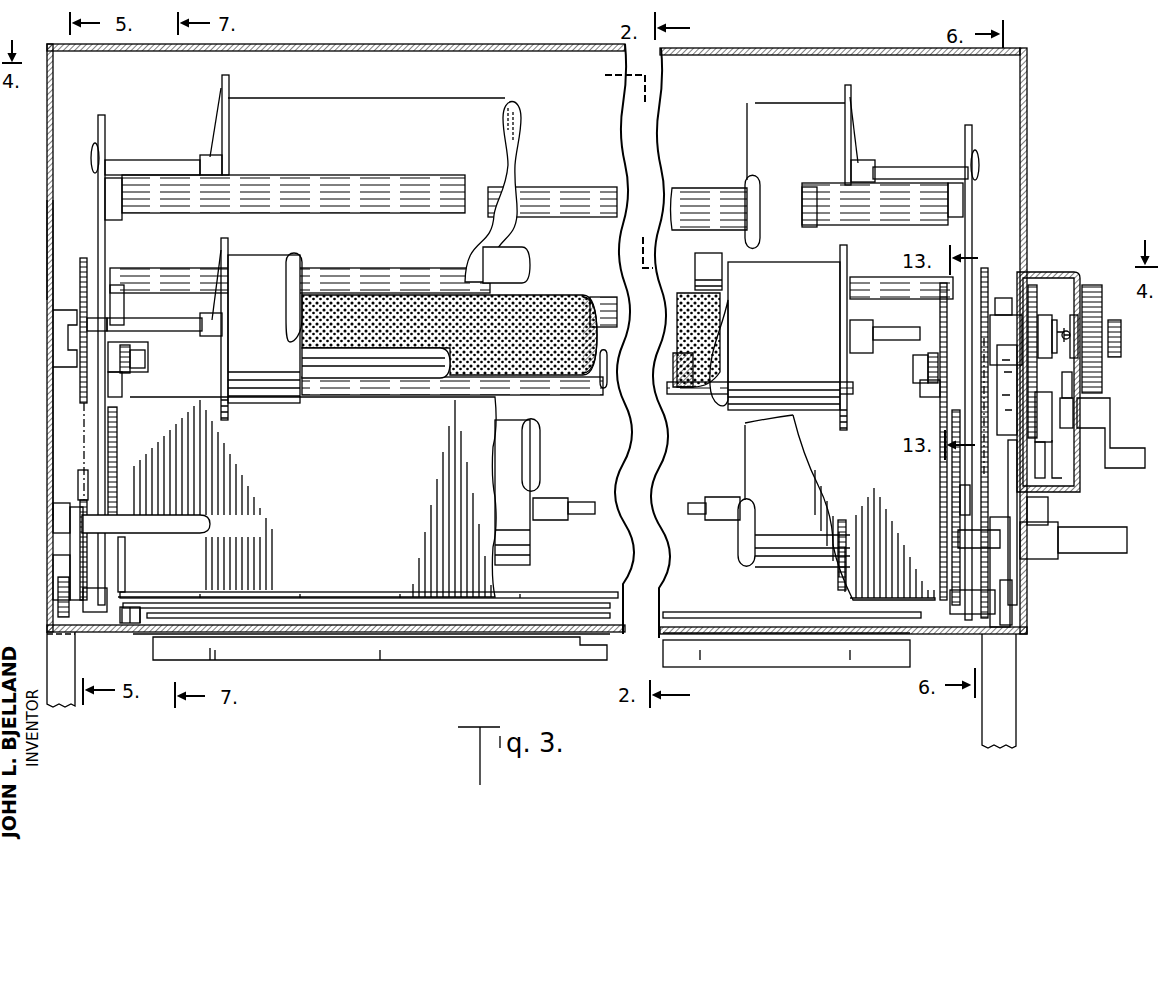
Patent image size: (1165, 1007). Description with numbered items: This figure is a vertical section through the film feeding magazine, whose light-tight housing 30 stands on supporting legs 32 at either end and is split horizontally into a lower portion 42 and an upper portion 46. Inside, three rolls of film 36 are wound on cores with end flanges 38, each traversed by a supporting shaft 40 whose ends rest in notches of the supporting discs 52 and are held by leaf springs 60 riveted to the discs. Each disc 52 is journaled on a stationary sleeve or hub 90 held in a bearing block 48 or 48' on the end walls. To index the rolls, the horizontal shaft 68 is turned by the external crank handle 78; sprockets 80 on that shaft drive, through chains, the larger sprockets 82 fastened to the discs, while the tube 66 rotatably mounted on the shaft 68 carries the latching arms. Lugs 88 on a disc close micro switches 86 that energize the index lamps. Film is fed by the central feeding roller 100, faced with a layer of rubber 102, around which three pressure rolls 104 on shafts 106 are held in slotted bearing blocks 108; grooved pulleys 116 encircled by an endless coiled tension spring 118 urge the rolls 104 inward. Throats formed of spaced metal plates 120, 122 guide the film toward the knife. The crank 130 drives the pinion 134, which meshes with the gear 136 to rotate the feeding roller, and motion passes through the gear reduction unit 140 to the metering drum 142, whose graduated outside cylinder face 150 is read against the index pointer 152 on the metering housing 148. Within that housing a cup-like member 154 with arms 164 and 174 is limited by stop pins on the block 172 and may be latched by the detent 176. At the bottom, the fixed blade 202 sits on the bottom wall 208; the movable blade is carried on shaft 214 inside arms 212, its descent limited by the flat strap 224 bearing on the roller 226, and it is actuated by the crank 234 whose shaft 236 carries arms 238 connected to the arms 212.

The light-tight housing 30 is at (1027, 126).
The supporting legs 32 is at (68, 652).
The film 36 is at (378, 100).
The flanges 38 is at (222, 106).
The supporting shaft 40 is at (152, 165).
The lower portion of the housing 42 is at (45, 440).
The upper portion of the housing 46 is at (47, 255).
The bearing block 48 is at (41, 338).
The bearing block 48' is at (1029, 299).
The supporting disc 52 is at (105, 128).
The leaf spring 60 is at (97, 183).
The tube 66 is at (560, 520).
The shaft 68 is at (580, 510).
The crank handle 78 is at (1048, 510).
The sprocket 80 is at (80, 478).
The sprocket 82 is at (78, 390).
The micro switch 86 is at (1005, 365).
The lug 88 is at (960, 345).
The stationary sleeve 90 is at (65, 350).
The central feeding roller 100 is at (525, 331).
The layer of rubber 102 is at (563, 307).
The pressure roll 104 is at (532, 258).
The shaft 106 is at (140, 370).
The slotted bearing block 108 is at (115, 375).
The grooved pulley 116 is at (148, 357).
The endless coiled tension spring 118 is at (132, 298).
The metal plate 120 is at (598, 187).
The metal plate 122 is at (463, 207).
The crank 130 is at (1085, 413).
The pinion 134 is at (1028, 422).
The gear 136 is at (1037, 290).
The gear reduction unit 140 is at (1045, 322).
The metering drum 142 is at (1080, 310).
The metering housing 148 is at (1078, 482).
The outside cylinder face 150 is at (1085, 375).
The index pointer 152 is at (1082, 335).
The cup-like member 154 is at (1060, 460).
The arm 164 is at (1063, 472).
The block 172 is at (1052, 435).
The arm 174 is at (1073, 412).
The latching detent 176 is at (1068, 372).
The lower fixed blade 202 is at (603, 605).
The bottom wall 208 is at (505, 640).
The arm 212 is at (50, 608).
The shaft 214 is at (100, 593).
The flat strap 224 is at (132, 605).
The roller 226 is at (120, 613).
The crank 234 is at (1125, 532).
The shaft 236 is at (175, 527).
The arm 238 is at (80, 565).